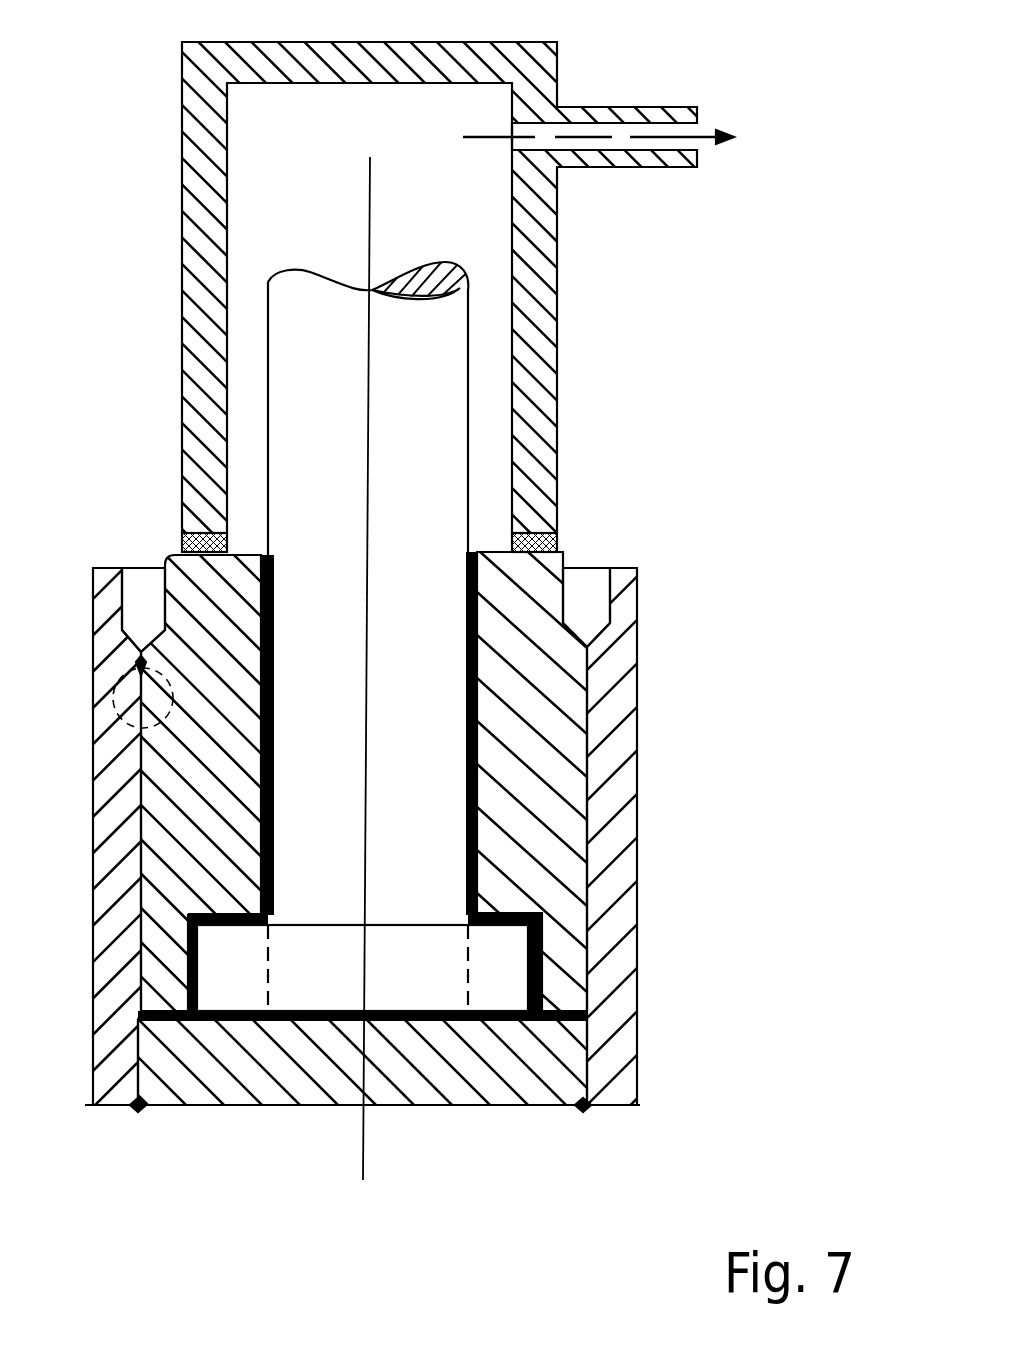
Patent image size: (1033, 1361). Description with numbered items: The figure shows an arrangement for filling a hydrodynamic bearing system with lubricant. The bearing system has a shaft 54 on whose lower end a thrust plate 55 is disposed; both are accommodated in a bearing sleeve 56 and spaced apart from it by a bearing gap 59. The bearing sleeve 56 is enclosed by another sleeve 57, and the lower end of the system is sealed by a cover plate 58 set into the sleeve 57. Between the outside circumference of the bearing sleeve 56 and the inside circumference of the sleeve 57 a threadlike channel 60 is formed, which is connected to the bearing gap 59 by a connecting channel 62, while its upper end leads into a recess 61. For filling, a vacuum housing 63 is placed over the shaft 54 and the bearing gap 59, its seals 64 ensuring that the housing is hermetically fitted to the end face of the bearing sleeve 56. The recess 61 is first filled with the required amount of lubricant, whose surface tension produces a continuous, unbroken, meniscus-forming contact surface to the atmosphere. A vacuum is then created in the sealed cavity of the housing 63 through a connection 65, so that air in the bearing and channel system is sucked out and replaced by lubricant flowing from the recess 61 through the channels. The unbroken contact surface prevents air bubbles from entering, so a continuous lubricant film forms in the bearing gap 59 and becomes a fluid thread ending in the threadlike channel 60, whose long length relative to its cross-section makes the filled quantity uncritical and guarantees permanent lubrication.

The shaft 54 is at (432, 448).
The thrust plate 55 is at (403, 990).
The bearing sleeve 56 is at (540, 862).
The sleeve 57 is at (613, 800).
The cover plate 58 is at (502, 1080).
The bearing gap 59 is at (470, 758).
The threadlike channel 60 is at (140, 955).
The recess 61 is at (143, 590).
The connecting channel 62 is at (555, 1014).
The vacuum housing 63 is at (538, 276).
The seals 64 is at (553, 537).
The connection 65 is at (672, 107).